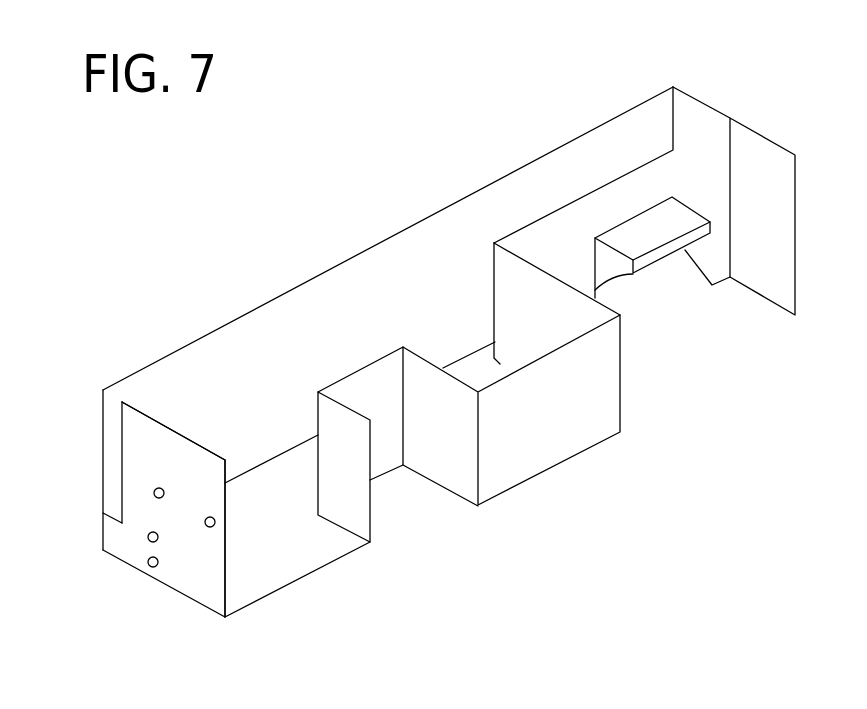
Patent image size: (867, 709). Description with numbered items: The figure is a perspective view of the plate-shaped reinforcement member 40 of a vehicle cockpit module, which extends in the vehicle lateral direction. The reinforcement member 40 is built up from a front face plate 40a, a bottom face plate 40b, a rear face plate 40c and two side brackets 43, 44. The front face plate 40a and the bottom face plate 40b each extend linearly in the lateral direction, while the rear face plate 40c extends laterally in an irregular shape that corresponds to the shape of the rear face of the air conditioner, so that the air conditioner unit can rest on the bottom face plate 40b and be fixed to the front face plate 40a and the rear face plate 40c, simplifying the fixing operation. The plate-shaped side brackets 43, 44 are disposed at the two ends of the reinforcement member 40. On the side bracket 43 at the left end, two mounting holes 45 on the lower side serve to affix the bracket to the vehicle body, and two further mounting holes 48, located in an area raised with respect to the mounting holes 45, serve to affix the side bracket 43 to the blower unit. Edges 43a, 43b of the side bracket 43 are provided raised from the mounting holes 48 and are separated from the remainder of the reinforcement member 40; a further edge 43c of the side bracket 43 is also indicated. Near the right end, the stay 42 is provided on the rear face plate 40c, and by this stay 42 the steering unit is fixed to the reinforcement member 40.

The reinforcement member 40 is at (588, 113).
The front face plate 40a is at (213, 330).
The bottom face plate 40b is at (292, 517).
The rear face plate 40c is at (547, 445).
The stay 42 is at (658, 253).
The side bracket 43 is at (190, 568).
The edge 43a is at (122, 428).
The edge 43b is at (228, 502).
The top flange of front plate 43c is at (177, 430).
The side bracket 44 is at (757, 130).
The mounting holes 45 is at (147, 537).
The mounting holes 48 is at (154, 490).